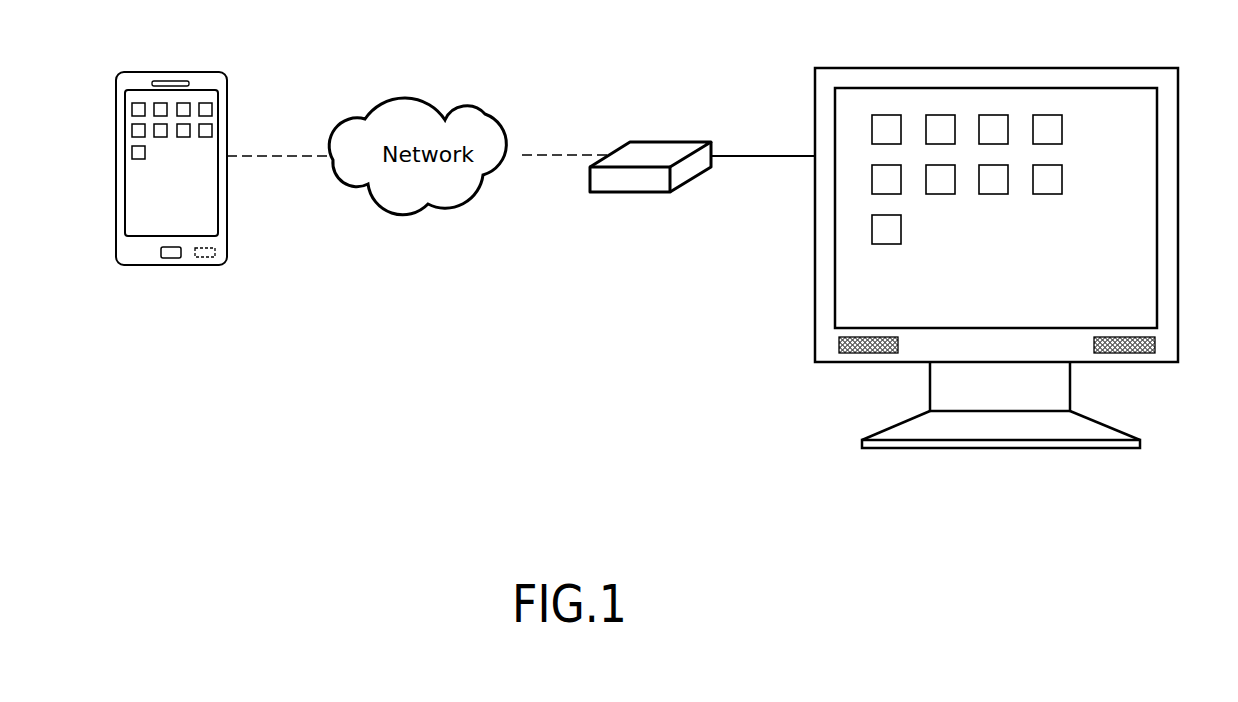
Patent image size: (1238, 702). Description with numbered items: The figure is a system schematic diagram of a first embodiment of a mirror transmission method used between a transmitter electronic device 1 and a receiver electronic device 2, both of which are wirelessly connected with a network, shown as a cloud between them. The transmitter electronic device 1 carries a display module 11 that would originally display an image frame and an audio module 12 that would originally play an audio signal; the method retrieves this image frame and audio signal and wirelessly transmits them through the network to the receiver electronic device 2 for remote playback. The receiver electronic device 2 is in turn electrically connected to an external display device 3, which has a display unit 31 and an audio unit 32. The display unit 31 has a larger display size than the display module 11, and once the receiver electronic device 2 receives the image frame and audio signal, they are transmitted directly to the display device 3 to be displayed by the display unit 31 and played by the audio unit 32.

The transmitter electronic device 1 is at (210, 152).
The display module 11 is at (207, 197).
The audio module 12 is at (215, 253).
The receiver electronic device 2 is at (657, 148).
The display device 3 is at (952, 224).
The display unit 31 is at (1110, 113).
The audio unit 32 is at (838, 343).